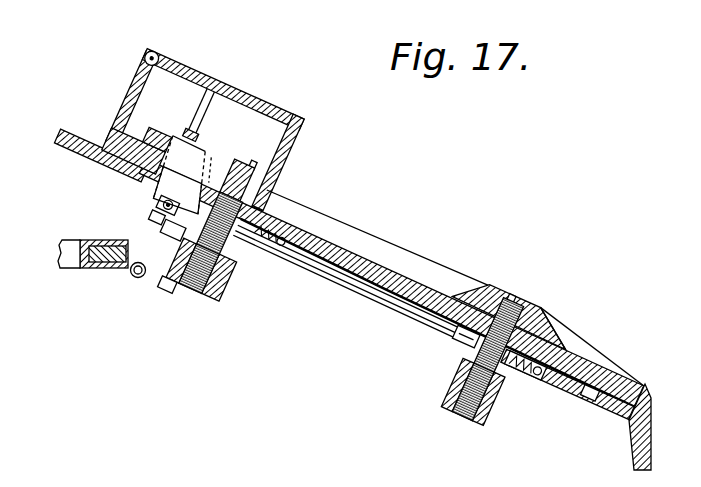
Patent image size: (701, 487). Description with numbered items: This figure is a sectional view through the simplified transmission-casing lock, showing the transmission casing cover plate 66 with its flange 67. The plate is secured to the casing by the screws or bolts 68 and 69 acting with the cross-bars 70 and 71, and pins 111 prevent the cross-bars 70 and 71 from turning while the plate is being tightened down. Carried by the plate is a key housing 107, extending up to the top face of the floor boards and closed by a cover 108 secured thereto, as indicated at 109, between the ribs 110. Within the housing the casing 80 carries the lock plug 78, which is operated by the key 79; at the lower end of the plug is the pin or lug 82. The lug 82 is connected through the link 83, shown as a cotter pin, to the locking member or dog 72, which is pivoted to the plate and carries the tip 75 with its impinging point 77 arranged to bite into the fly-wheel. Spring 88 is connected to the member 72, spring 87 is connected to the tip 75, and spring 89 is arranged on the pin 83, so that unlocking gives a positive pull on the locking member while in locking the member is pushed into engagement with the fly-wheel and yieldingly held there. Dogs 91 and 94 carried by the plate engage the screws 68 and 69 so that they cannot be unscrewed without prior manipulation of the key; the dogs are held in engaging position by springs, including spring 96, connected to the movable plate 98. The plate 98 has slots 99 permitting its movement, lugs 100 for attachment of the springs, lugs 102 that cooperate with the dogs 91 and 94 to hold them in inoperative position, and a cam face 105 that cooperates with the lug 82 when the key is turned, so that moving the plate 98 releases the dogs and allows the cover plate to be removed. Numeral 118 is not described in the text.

The transmission casing cover plate 66 is at (367, 262).
The flange 67 is at (567, 393).
The screw or bolt 68 is at (512, 305).
The screw or bolt 69 is at (246, 188).
The cross-bar 70 is at (492, 417).
The cross-bar 71 is at (213, 294).
The locking member or dog 72 is at (106, 267).
The tip 75 is at (84, 268).
The impinging or engaging point 77 is at (58, 250).
The lock plug 78 is at (217, 152).
The key 79 is at (222, 100).
The casing 80 is at (185, 138).
The pin or lug 82 is at (156, 219).
The link 83 is at (162, 209).
The spring 87 is at (143, 264).
The spring 88 is at (138, 279).
The spring 89 is at (160, 203).
The dog 91 is at (262, 197).
The dog 94 is at (540, 324).
The spring 96 is at (523, 367).
The movable plate 98 is at (392, 307).
The slot 99 is at (242, 236).
The lug 100 is at (295, 215).
The lug 102 is at (473, 332).
The cam face 105 is at (190, 207).
The key housing 107 is at (285, 154).
The cover 108 is at (205, 72).
The securing point 109 is at (152, 53).
The rib 110 is at (130, 82).
The pin 111 is at (168, 292).
The plate 118 is at (171, 231).